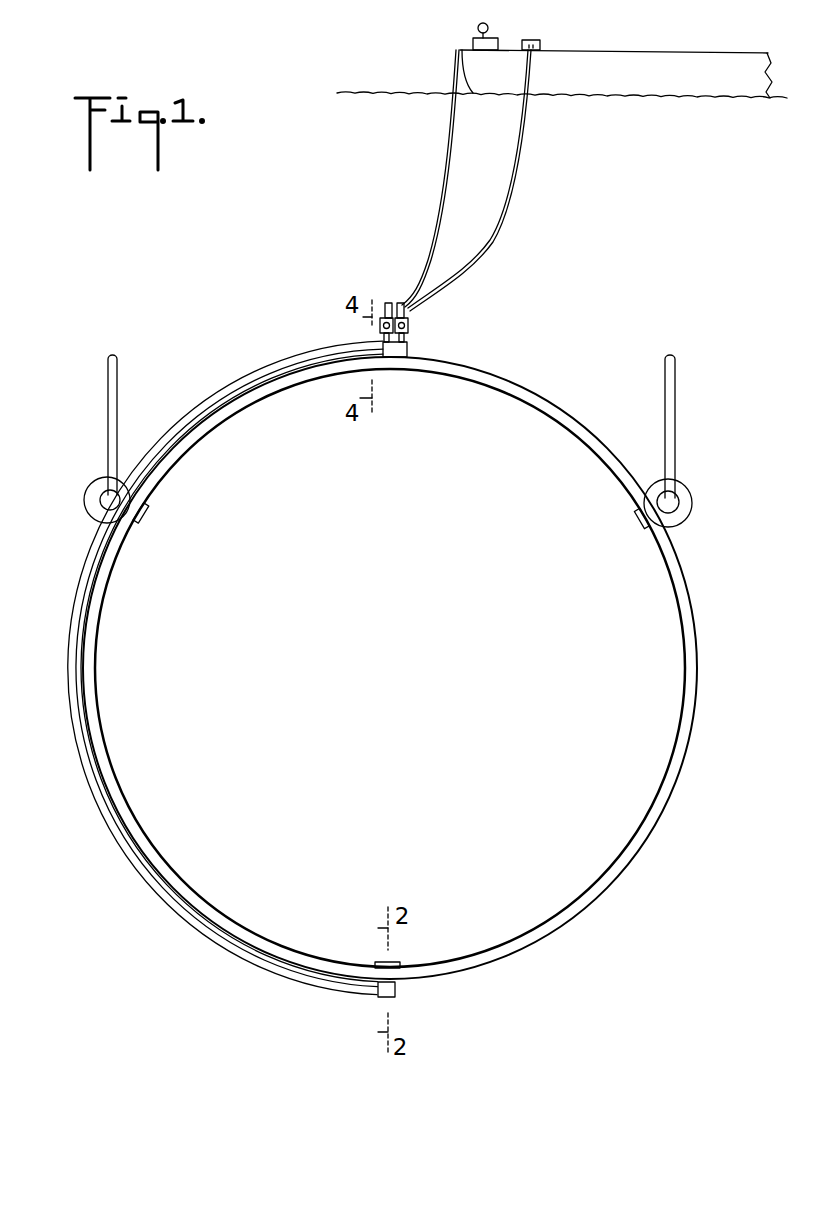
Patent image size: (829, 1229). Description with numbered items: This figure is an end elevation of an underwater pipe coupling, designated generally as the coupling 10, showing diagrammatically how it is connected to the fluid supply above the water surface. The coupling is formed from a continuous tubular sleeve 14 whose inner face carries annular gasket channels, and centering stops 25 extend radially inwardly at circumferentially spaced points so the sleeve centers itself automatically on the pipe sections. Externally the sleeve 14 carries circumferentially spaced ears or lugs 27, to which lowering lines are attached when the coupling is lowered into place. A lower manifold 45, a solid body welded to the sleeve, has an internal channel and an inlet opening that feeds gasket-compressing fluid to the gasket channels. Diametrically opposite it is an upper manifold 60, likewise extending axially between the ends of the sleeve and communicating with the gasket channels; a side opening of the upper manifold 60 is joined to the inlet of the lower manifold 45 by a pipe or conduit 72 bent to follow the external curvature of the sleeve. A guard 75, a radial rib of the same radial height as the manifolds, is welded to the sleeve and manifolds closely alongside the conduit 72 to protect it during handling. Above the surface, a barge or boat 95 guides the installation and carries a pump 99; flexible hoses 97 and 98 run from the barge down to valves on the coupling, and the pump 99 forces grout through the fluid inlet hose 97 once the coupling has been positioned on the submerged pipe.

The underwater coupling 10 is at (416, 684).
The tubular sleeve 14 is at (695, 632).
The centering stops 25 is at (143, 508).
The ears or lugs 27 is at (93, 513).
The lower manifold 45 is at (395, 987).
The upper manifold 60 is at (407, 348).
The pipe or conduit 72 is at (313, 977).
The guard 75 is at (223, 950).
The barge or boat 95 is at (688, 62).
The fluid inlet hose 97 is at (445, 160).
The hose 98 is at (497, 213).
The pump 99 is at (493, 45).